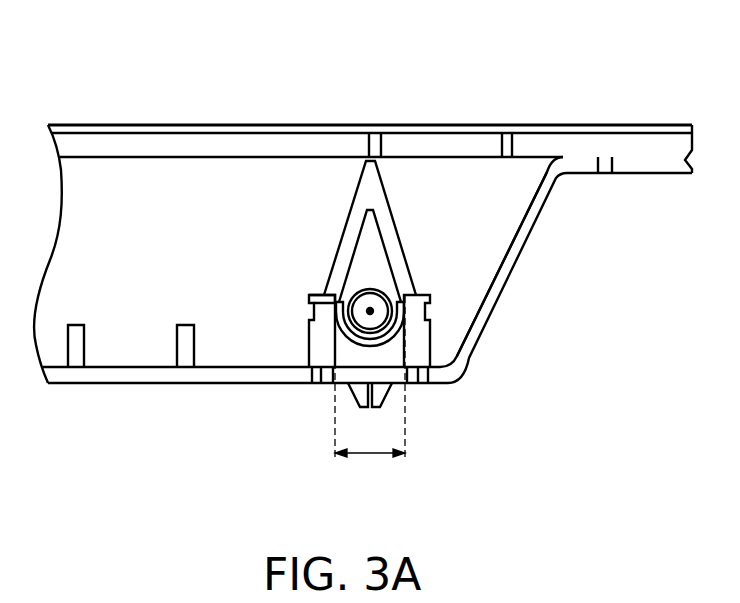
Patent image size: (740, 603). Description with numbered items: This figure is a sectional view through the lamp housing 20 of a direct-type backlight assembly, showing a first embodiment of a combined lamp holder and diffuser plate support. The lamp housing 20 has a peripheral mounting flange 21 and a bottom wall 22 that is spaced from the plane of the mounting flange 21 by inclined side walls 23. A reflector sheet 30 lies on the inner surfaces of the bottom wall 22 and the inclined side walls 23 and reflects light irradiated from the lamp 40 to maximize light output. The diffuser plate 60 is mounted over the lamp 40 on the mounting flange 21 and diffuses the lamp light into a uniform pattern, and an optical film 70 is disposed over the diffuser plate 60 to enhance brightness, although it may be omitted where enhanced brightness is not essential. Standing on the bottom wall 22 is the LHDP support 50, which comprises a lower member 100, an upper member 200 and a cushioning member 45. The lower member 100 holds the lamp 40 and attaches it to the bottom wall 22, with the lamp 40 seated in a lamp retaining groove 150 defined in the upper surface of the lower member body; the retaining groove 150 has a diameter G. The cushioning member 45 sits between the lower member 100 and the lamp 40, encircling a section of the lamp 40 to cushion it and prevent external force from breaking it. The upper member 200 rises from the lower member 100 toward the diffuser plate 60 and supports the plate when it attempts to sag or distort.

The lamp housing 20 is at (496, 302).
The peripheral mounting flange 21 is at (663, 167).
The bottom wall 22 is at (78, 374).
The inclined side walls 23 is at (503, 263).
The reflector sheet 30 is at (245, 377).
The lamp 40 is at (374, 309).
The cushioning member 45 is at (312, 311).
The LHDP support 50 is at (362, 264).
The diffuser plate 60 is at (643, 145).
The optical film 70 is at (572, 126).
The lower member 100 is at (371, 292).
The lamp retaining groove 150 is at (430, 300).
The upper member 200 is at (389, 201).
The diameter G is at (370, 376).